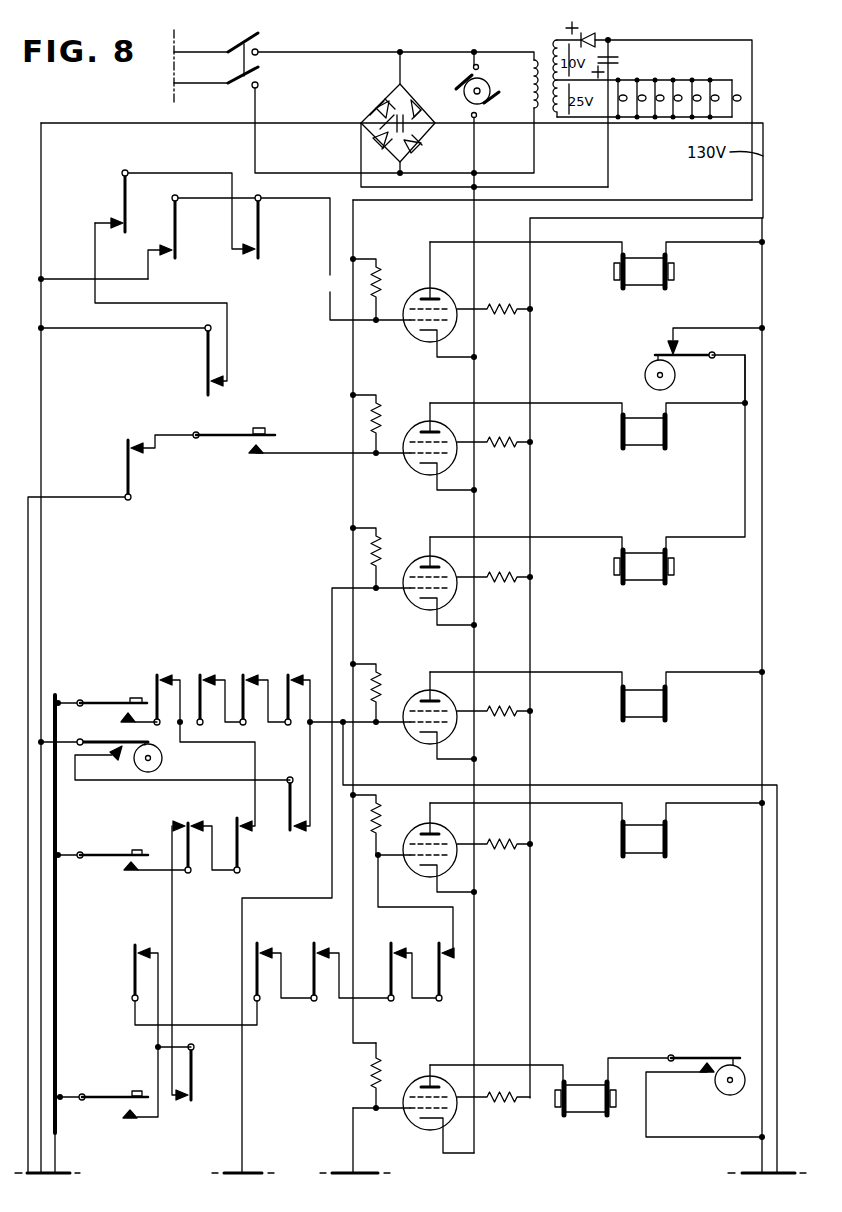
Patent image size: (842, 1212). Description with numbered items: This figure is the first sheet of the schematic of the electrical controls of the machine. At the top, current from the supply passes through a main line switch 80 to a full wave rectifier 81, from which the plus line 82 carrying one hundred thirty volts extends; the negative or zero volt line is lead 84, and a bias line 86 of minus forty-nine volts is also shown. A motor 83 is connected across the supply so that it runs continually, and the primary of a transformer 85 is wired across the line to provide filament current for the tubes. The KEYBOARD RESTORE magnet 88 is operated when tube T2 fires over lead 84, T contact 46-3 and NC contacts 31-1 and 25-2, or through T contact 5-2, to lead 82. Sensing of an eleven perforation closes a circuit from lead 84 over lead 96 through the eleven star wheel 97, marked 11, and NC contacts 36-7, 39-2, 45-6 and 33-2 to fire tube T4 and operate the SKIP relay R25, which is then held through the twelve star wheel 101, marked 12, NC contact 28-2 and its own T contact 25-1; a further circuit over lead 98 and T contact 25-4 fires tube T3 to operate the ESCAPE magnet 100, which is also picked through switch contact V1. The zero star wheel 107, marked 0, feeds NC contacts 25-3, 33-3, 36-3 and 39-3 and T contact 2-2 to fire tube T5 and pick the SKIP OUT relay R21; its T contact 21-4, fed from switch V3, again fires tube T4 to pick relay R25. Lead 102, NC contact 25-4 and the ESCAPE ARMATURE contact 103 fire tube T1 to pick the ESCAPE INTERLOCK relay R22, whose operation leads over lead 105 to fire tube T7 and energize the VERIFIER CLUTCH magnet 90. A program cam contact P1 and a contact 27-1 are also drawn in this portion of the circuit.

The main line switch 80 is at (253, 34).
The full wave rectifier 81 is at (373, 102).
The motor 83 is at (465, 78).
The negative or zero volt line 84 is at (38, 178).
The transformer 85 is at (552, 42).
The bias line 86 is at (680, 198).
The KEYBOARD RESTORE magnet 88 is at (627, 272).
The VERIFIER CLUTCH magnet 90 is at (675, 570).
The lead 96 is at (50, 1157).
The eleven star wheel 97 is at (123, 715).
The lead 98 is at (780, 915).
The ESCAPE magnet 100 is at (583, 1107).
The twelve star wheel 101 is at (122, 870).
The lead 102 is at (70, 497).
The ESCAPE ARMATURE contact 103 is at (263, 430).
The lead 105 is at (337, 605).
The zero star wheel 107 is at (130, 1128).
The zero key contact 0 is at (132, 1088).
The key contact 11 is at (135, 698).
The key contact 12 is at (135, 847).
The plus line 82 is at (768, 755).
The NC contact of relay 31 31-1 is at (118, 222).
The T contact of relay R5 5-2 is at (163, 237).
The NC contact of relay 25 25-2 is at (252, 257).
The T contact of relay R46 46-3 is at (225, 381).
The contact of relay 25 25-4 is at (134, 446).
The NC contact of relay 36 36-7 is at (165, 680).
The NC contact of relay 39 39-2 is at (208, 680).
The NC contact of relay 45 45-6 is at (257, 680).
The NC contact of relay 33 33-2 is at (318, 663).
The T contact of relay R21 21-4 is at (307, 817).
The NC contact of relay 28 28-2 is at (197, 818).
The T contact of relay R25 25-1 is at (255, 833).
The NC contact of relay 25 25-3 is at (147, 952).
The relay contact 27-1 is at (182, 1107).
The NC contact of relay 33 33-3 is at (260, 950).
The NC contact of relay 36 36-3 is at (315, 950).
The NC contact of relay 39 39-3 is at (392, 950).
The T contact of relay R2 2-2 is at (448, 958).
The tube T1 is at (418, 418).
The tube T2 is at (422, 287).
The tube T3 is at (423, 1075).
The tube T4 is at (420, 688).
The tube T5 is at (418, 825).
The tube T7 is at (418, 560).
The cam contact P1 is at (645, 366).
The switch contact V1 is at (725, 1088).
The switch V3 is at (163, 762).
The SKIP OUT relay R21 is at (625, 837).
The ESCAPE INTERLOCK relay R22 is at (628, 437).
The SKIP relay R25 is at (628, 705).